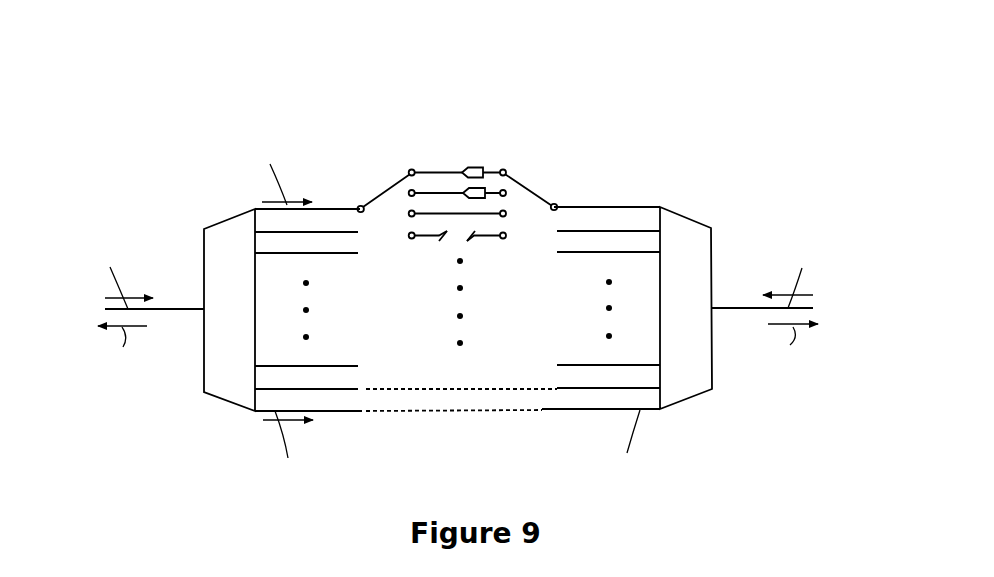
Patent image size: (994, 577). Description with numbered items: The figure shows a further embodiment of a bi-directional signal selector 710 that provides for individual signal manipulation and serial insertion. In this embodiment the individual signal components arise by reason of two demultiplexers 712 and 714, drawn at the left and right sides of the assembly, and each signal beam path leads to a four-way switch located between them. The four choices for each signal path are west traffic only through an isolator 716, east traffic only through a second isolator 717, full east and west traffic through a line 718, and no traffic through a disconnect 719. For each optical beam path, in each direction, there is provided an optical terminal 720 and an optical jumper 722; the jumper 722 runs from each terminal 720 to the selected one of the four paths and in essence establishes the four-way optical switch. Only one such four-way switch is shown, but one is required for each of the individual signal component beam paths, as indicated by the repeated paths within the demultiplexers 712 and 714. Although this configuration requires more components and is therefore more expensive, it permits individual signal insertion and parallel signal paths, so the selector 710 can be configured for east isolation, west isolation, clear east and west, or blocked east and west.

The bi-directional signal selector 710 is at (597, 121).
The demultiplexer 712 is at (223, 400).
The demultiplexer 714 is at (693, 397).
The isolator 716 is at (466, 166).
The isolator 717 is at (484, 190).
The line 718 is at (432, 212).
The disconnect 719 is at (486, 237).
The optical terminal 720 is at (358, 206).
The optical jumper 722 is at (388, 188).